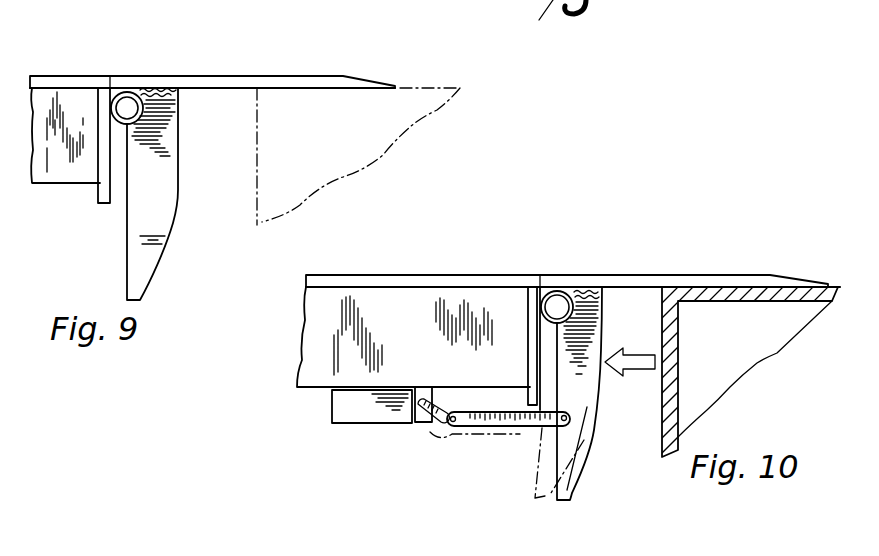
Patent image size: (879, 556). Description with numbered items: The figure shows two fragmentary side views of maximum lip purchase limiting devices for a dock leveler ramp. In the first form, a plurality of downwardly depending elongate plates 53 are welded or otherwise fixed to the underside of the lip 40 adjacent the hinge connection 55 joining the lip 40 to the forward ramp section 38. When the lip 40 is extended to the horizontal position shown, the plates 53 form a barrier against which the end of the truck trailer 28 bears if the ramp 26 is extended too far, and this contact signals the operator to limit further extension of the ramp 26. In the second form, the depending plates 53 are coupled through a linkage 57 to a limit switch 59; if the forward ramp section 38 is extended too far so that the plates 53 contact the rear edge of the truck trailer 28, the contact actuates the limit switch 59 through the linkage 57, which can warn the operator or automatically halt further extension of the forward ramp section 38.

In FIG. 9, the ramp 26 is at (193, 60).
In FIG. 10, the ramp 26 is at (483, 268).
In FIG. 9, the truck trailer 28 is at (430, 82).
In FIG. 10, the truck trailer 28 is at (828, 284).
In FIG. 9, the forward ramp section 38 is at (85, 76).
In FIG. 10, the forward ramp section 38 is at (420, 270).
In FIG. 9, the lip 40 is at (237, 76).
In FIG. 10, the lip 40 is at (693, 268).
In FIG. 9, the downwardly depending elongate plates 53 is at (163, 212).
In FIG. 10, the downwardly depending elongate plates 53 is at (589, 465).
In FIG. 9, the hinge connection 55 is at (150, 64).
In FIG. 10, the hinge connection 55 is at (560, 288).
In FIG. 10, the linkage 57 is at (472, 422).
In FIG. 10, the limit switch 59 is at (360, 415).